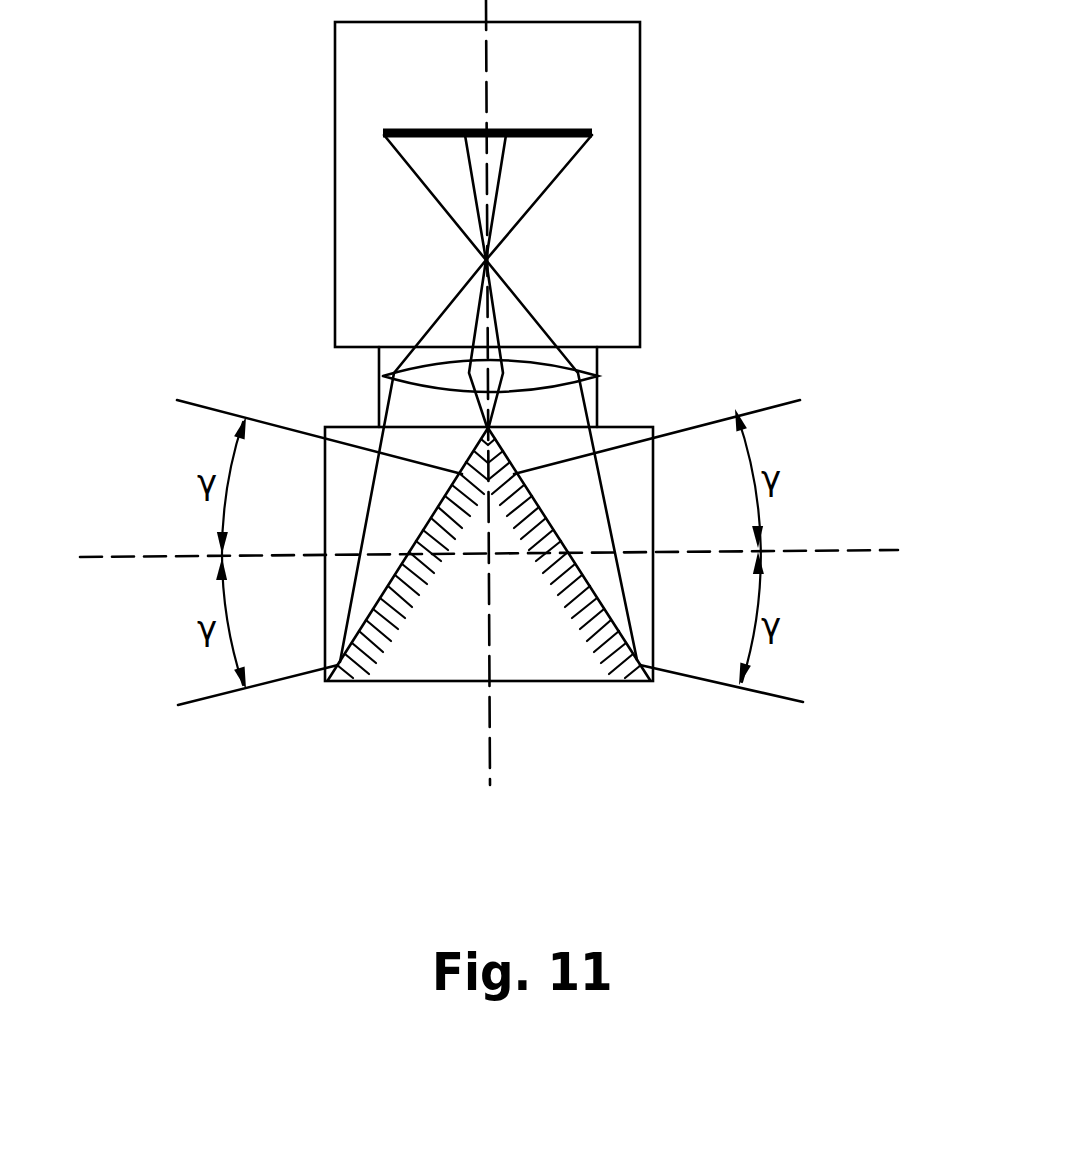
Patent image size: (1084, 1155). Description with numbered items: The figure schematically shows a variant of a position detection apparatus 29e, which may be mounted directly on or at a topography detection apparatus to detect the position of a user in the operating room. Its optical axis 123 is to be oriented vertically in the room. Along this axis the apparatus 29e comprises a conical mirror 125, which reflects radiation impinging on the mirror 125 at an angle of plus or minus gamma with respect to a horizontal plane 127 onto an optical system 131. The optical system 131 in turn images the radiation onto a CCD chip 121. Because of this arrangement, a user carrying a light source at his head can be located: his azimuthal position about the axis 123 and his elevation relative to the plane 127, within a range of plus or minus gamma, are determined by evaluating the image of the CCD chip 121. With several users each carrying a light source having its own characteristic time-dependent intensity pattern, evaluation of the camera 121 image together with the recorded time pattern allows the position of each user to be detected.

The position detection apparatus 29e is at (204, 160).
The CCD chip 121 is at (564, 126).
The optical system 131 is at (553, 390).
The conical mirror 125 is at (617, 630).
The optical axis 123 is at (492, 743).
The horizontal plane 127 is at (877, 550).